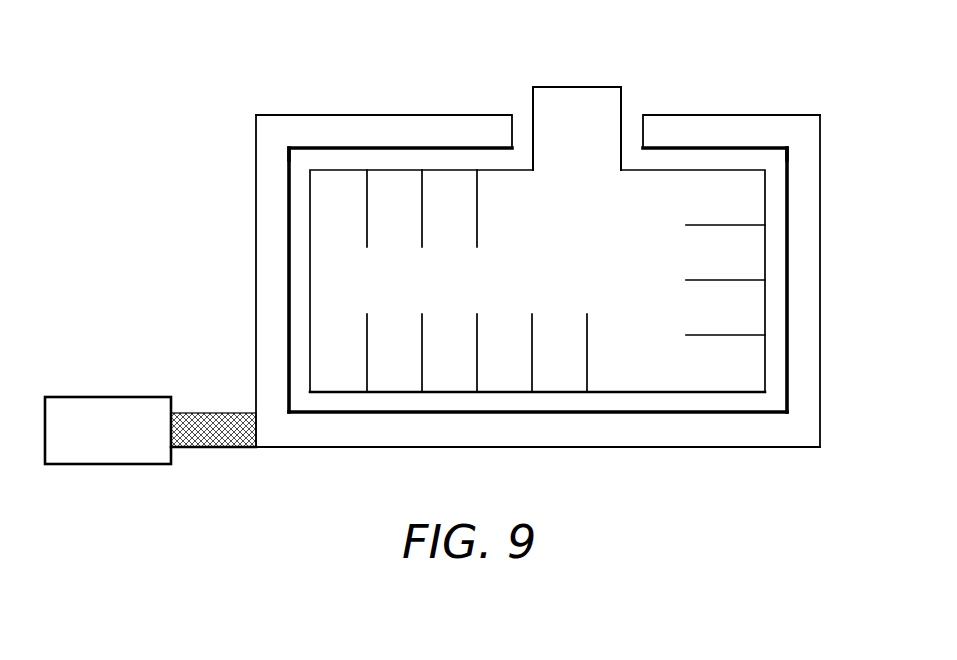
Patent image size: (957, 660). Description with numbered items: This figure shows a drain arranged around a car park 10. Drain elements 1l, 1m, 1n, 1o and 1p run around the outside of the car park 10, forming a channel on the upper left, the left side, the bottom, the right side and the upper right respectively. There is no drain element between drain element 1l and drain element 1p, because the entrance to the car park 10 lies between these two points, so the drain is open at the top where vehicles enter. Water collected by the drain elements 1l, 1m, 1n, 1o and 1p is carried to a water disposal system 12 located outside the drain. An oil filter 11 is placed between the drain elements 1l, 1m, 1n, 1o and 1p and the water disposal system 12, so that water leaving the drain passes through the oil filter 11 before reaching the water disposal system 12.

The drain element 1l is at (383, 126).
The drain element 1p is at (733, 124).
The drain element 1m is at (263, 281).
The drain element 1o is at (812, 279).
The drain element 1n is at (539, 448).
The car park 10 is at (537, 281).
The oil filter 11 is at (211, 413).
The water disposal system 12 is at (108, 397).